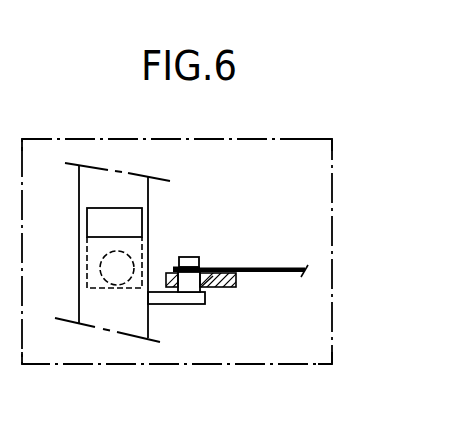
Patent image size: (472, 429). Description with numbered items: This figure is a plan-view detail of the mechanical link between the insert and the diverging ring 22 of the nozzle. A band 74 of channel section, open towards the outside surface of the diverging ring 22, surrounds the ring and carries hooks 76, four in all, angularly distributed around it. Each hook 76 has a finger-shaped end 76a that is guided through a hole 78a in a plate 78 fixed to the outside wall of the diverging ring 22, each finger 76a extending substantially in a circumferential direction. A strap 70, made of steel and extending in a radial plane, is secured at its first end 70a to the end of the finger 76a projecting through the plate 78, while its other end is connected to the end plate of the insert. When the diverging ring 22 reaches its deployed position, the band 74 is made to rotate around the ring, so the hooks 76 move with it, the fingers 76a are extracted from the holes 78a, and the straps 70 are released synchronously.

The diverging ring 22 is at (300, 146).
The band 74 is at (103, 197).
The hook 76 is at (178, 297).
The finger 76a is at (186, 256).
The strap 70 is at (297, 266).
The strip end 70a is at (202, 268).
The plate 78 is at (237, 280).
The hole 78a is at (208, 286).